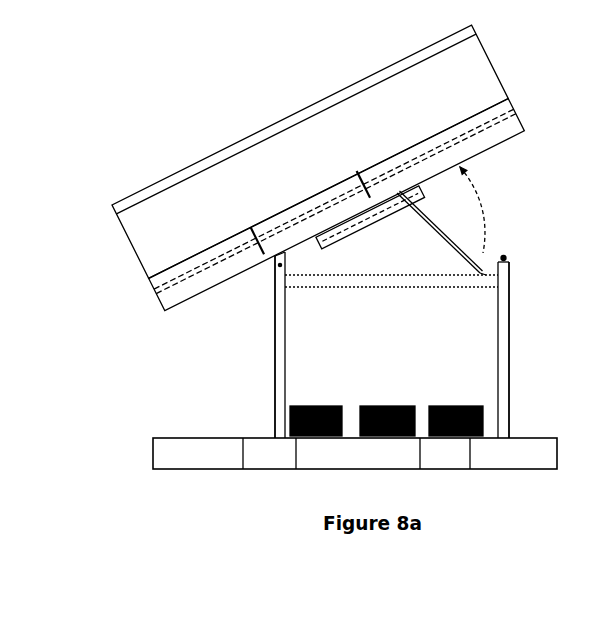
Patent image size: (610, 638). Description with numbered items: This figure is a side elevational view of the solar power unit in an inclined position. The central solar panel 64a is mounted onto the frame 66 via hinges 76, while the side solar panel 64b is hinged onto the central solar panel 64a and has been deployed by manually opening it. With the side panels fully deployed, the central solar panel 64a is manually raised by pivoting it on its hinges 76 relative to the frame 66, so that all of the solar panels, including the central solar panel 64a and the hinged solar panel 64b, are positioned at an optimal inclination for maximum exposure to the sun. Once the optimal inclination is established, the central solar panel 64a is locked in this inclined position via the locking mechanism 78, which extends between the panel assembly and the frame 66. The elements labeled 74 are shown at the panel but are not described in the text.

The central solar panel 64a is at (495, 139).
The solar panel 64b is at (481, 71).
The frame 66 is at (506, 342).
The fasteners 74 is at (244, 222).
The hinges 76 is at (264, 274).
The locking mechanism 78 is at (409, 229).